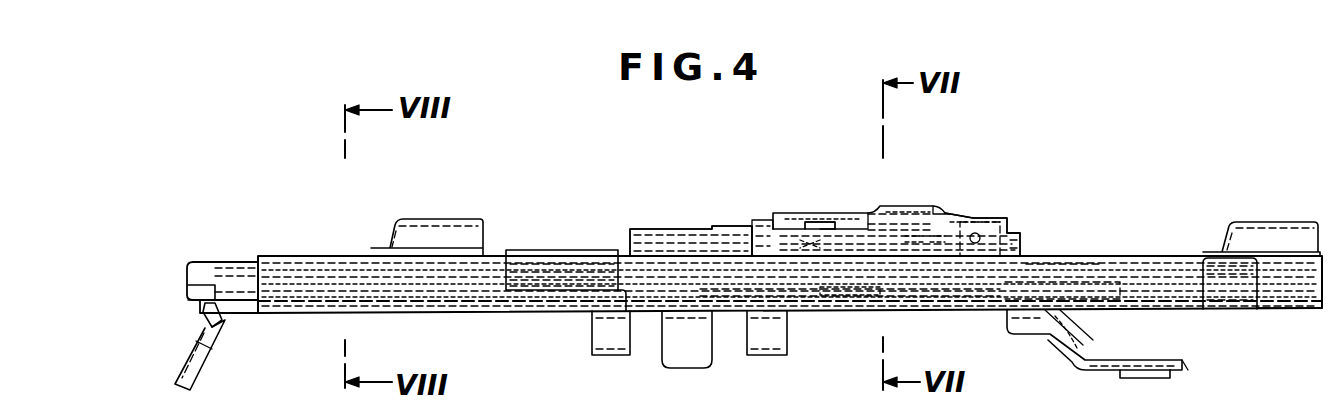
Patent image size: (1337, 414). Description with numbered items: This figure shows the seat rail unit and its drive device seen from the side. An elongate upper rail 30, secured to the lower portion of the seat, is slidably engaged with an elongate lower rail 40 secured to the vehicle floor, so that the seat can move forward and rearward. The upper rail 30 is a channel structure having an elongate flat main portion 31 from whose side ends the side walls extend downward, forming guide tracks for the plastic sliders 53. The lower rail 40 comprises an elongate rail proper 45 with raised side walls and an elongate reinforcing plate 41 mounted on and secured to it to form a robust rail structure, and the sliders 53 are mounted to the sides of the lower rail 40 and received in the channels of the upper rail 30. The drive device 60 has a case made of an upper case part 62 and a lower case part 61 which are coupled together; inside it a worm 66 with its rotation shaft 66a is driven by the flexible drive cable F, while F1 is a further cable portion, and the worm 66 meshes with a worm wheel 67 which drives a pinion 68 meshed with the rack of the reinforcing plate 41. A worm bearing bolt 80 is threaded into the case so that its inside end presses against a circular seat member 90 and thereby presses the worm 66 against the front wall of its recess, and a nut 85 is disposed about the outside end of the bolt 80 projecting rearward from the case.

The upper rail 30 is at (348, 256).
The flat main portion 31 is at (1140, 254).
The lower rail 40 is at (192, 287).
The reinforcing plate 41 is at (229, 306).
The rail proper 45 is at (192, 300).
The plastic slider 53 is at (208, 262).
The drive device 60 is at (901, 187).
The lower case part 61 is at (1023, 255).
The upper case part 62 is at (977, 222).
The worm 66 is at (876, 210).
The rotation shaft 66a is at (810, 210).
The worm wheel 67 is at (836, 222).
The pinion 68 is at (879, 289).
The worm bearing bolt 80 is at (1010, 220).
The nut 85 is at (1014, 228).
The circular seat member 90 is at (968, 215).
The flexible drive cable F is at (669, 231).
The flange portion F1 is at (788, 228).